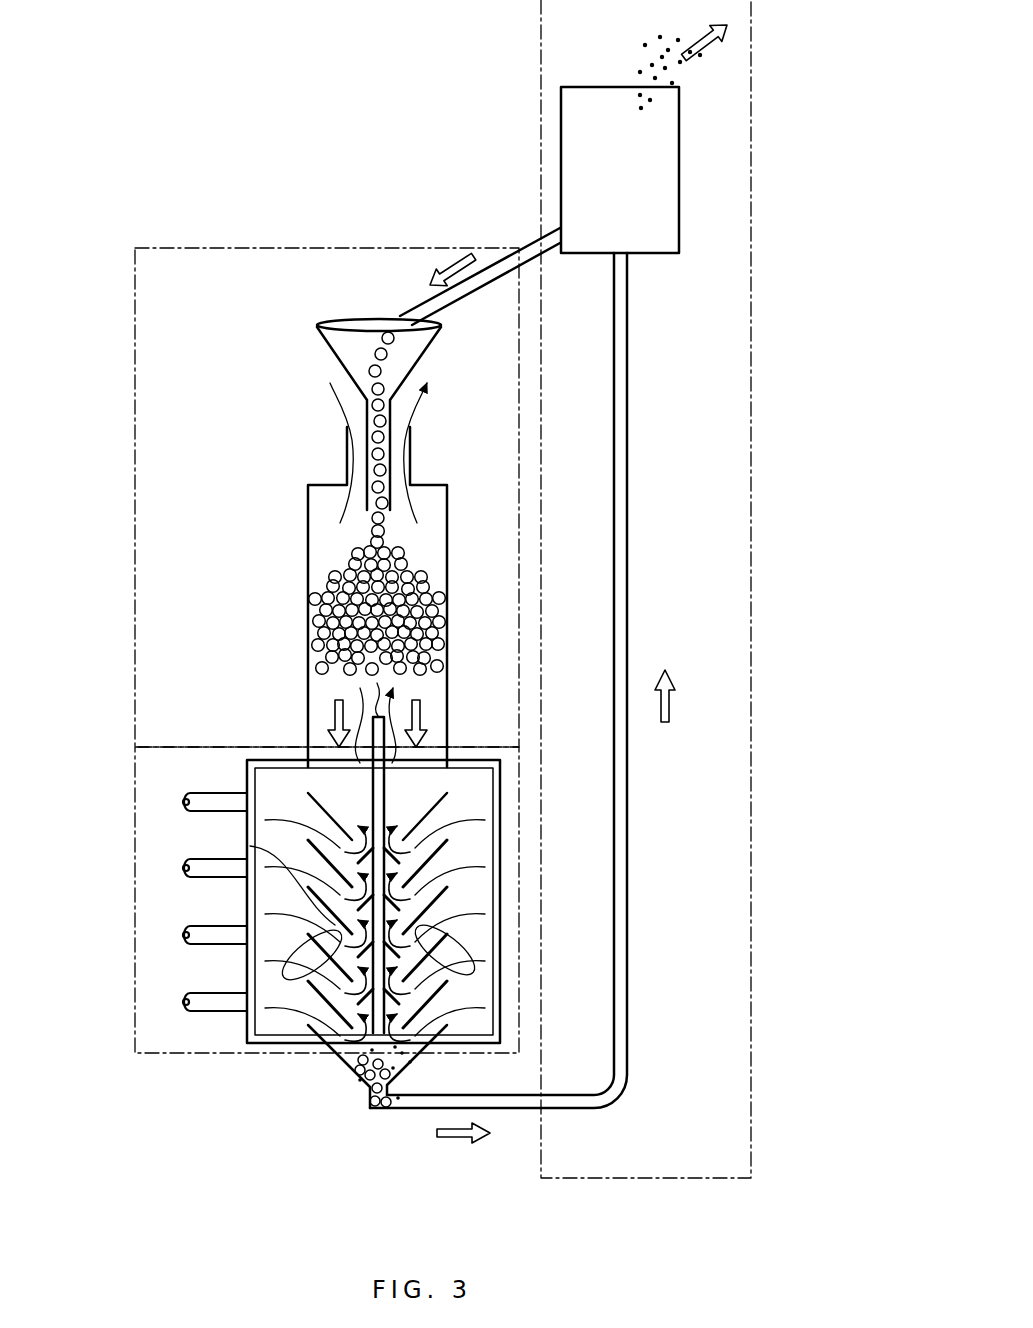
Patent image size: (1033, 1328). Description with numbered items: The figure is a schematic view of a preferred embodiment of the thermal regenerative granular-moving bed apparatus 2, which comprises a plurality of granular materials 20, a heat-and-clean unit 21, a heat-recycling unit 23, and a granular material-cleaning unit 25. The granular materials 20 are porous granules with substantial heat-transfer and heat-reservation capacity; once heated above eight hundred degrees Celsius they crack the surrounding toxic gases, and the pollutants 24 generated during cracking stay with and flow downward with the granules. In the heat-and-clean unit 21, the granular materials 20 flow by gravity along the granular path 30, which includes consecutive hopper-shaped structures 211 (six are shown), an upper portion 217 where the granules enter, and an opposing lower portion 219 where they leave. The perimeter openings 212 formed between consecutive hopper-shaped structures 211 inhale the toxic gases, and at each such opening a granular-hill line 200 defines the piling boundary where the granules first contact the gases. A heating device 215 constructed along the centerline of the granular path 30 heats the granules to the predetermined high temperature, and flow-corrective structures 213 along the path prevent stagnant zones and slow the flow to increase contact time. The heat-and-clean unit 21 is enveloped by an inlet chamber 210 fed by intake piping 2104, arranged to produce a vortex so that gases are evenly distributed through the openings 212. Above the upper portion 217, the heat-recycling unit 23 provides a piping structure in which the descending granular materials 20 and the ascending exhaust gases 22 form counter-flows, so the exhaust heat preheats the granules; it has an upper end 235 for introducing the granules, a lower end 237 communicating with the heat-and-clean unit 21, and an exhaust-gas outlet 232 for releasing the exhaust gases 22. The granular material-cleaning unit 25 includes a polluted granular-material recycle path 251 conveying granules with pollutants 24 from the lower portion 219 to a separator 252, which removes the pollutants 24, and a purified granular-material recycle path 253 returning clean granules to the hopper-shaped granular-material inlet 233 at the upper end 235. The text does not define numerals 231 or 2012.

The thermal regenerative granular-moving bed apparatus 2 is at (262, 207).
The granular materials 20 is at (362, 348).
The heat-and-clean unit 21 is at (172, 785).
The exhaust gases 22 is at (395, 690).
The heat-recycling unit 23 is at (199, 318).
The pollutants 24 is at (660, 62).
The granular material-cleaning unit 25 is at (713, 436).
The granular path 30 is at (371, 817).
The granular-hill line 200 is at (405, 840).
The inlet chamber 210 is at (250, 985).
The hopper-shaped structures 211 is at (300, 925).
The perimeter openings 212 is at (300, 862).
The flow-corrective structures 213 is at (405, 925).
The heating device 215 is at (322, 766).
The upper portion 217 is at (430, 775).
The lower portion 219 is at (333, 1060).
The storage chamber 231 is at (312, 690).
The exhaust-gas outlet 232 is at (345, 440).
The hopper-shaped granular-material inlet 233 is at (345, 322).
The upper end 235 is at (340, 480).
The lower end 237 is at (330, 740).
The polluted granular-material recycle path 251 is at (628, 990).
The separator 252 is at (641, 192).
The purified granular-material recycle path 253 is at (535, 245).
The outlet 2012 is at (305, 1036).
The intake piping 2104 is at (183, 802).